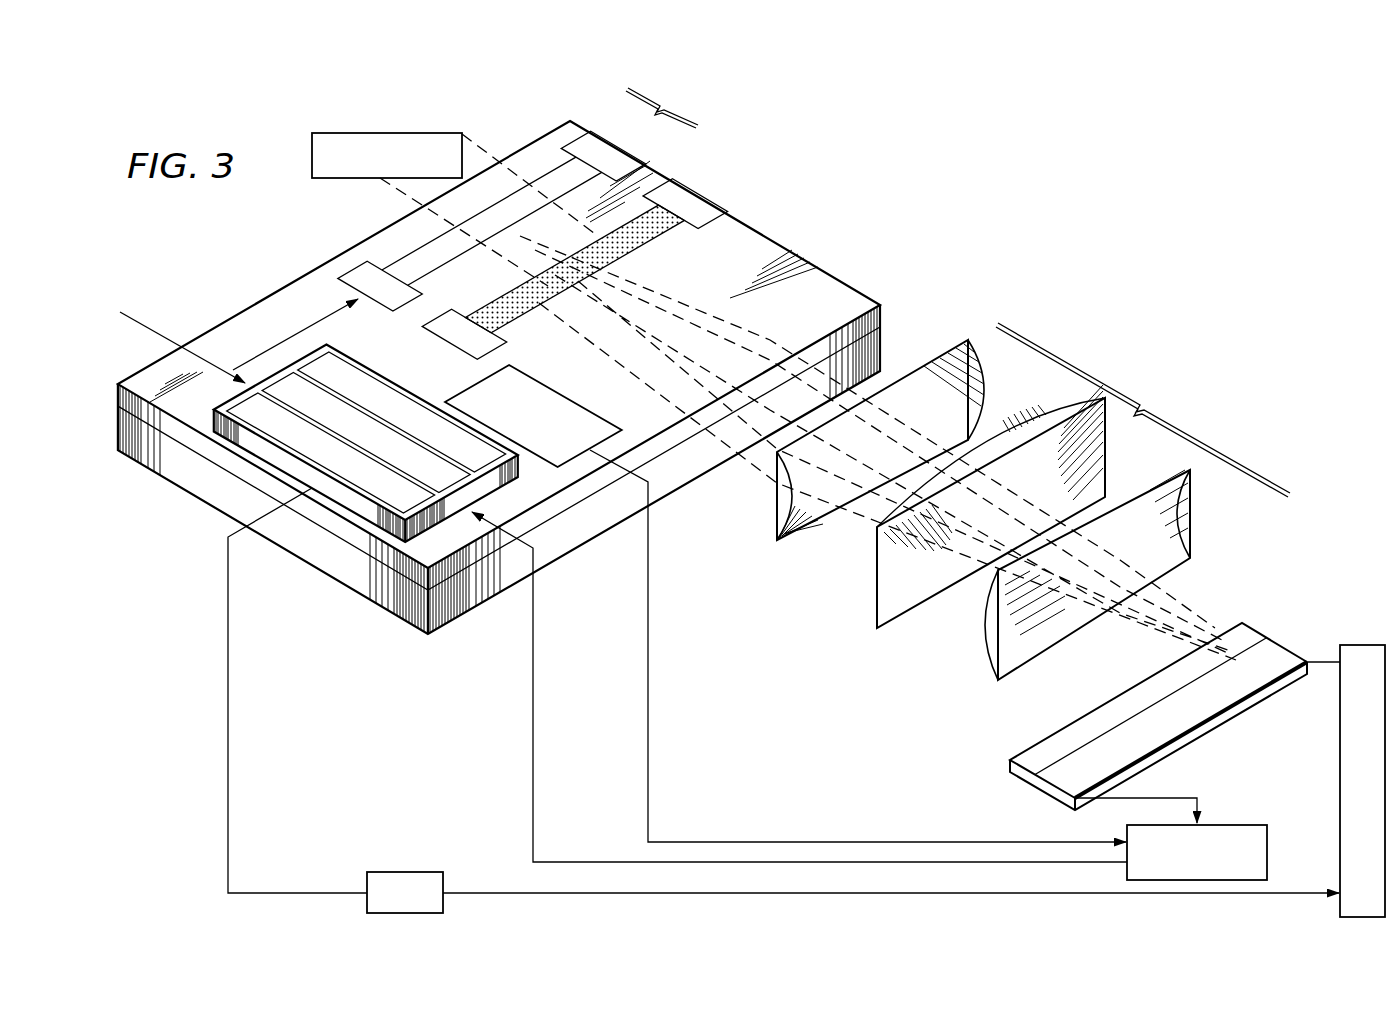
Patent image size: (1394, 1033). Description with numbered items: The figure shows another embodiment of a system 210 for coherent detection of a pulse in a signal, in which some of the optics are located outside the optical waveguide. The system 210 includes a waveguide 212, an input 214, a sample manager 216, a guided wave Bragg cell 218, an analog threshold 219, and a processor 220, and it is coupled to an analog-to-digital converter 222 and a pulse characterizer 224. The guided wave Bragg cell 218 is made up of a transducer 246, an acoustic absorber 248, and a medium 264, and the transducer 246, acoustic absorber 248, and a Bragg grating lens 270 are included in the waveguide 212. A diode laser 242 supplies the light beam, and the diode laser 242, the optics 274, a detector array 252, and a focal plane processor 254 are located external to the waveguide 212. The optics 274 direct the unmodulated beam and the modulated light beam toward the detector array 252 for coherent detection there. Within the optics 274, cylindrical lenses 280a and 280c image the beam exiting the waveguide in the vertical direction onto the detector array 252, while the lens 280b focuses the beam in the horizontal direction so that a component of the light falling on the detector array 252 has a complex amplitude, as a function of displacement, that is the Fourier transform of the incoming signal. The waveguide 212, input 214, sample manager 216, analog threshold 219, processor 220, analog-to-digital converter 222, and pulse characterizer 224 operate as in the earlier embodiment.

The system 210 is at (1002, 228).
The waveguide 212 is at (107, 379).
The input 214 is at (124, 311).
The sample manager 216 is at (253, 445).
The guided wave Bragg cell 218 is at (669, 100).
The analog threshold 219 is at (535, 382).
The processor 220 is at (1233, 824).
The analog-to-digital converter 222 is at (407, 871).
The pulse characterizer 224 is at (1362, 645).
The diode laser 242 is at (418, 133).
The transducer 246 is at (352, 268).
The acoustic absorber 248 is at (618, 157).
The detector array 252 is at (1070, 730).
The focal plane processor 254 is at (1285, 658).
The medium 264 is at (547, 170).
The Bragg grating lens 270 is at (702, 205).
The optics 274 is at (1143, 410).
The cylindrical lens 280a is at (776, 520).
The lens 280b is at (876, 576).
The cylindrical lens 280c is at (992, 648).